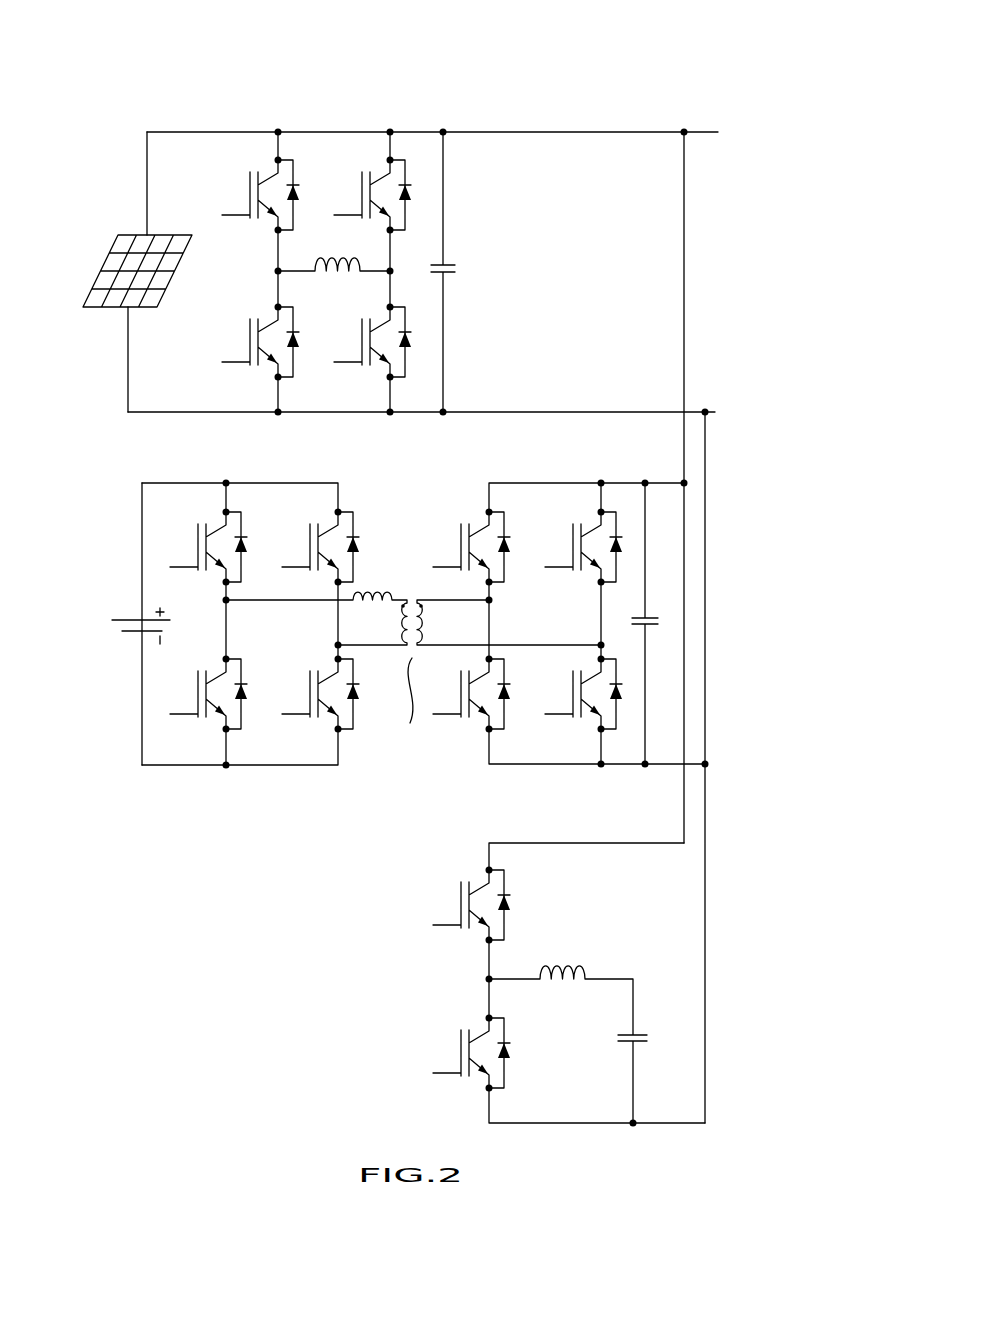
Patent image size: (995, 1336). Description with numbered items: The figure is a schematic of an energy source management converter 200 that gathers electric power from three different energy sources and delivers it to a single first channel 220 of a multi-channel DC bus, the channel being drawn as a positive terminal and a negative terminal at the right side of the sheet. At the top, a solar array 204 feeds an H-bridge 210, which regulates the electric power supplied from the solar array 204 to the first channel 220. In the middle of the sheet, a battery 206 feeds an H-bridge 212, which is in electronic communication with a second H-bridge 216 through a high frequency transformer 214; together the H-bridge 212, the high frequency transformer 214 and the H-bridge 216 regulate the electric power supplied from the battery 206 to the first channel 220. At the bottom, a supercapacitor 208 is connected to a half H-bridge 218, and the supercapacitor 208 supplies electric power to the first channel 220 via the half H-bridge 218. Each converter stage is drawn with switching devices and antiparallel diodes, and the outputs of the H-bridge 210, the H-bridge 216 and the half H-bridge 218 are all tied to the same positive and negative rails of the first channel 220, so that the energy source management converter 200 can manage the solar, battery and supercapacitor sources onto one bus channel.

The energy source management converter 200 is at (100, 80).
The solar array 204 is at (100, 192).
The battery 206 is at (92, 550).
The supercapacitor 208 is at (645, 1012).
The H-bridge 210 is at (278, 95).
The H-bridge 212 is at (255, 787).
The high frequency transformer 214 is at (407, 568).
The H-bridge 216 is at (500, 777).
The half H-bridge 218 is at (437, 975).
The first channel 220 is at (760, 193).